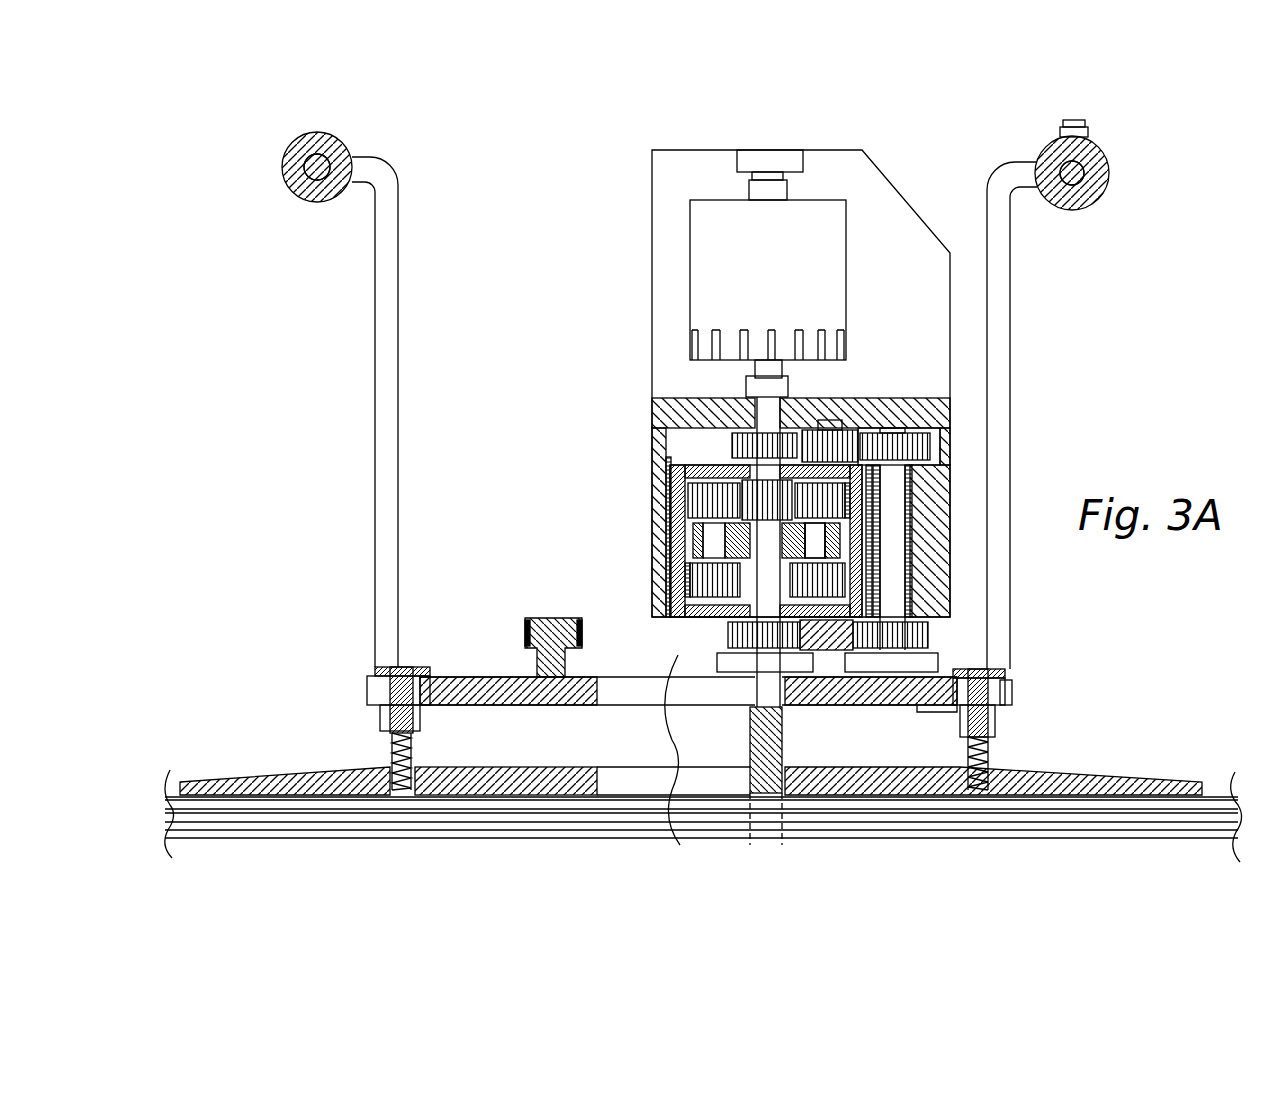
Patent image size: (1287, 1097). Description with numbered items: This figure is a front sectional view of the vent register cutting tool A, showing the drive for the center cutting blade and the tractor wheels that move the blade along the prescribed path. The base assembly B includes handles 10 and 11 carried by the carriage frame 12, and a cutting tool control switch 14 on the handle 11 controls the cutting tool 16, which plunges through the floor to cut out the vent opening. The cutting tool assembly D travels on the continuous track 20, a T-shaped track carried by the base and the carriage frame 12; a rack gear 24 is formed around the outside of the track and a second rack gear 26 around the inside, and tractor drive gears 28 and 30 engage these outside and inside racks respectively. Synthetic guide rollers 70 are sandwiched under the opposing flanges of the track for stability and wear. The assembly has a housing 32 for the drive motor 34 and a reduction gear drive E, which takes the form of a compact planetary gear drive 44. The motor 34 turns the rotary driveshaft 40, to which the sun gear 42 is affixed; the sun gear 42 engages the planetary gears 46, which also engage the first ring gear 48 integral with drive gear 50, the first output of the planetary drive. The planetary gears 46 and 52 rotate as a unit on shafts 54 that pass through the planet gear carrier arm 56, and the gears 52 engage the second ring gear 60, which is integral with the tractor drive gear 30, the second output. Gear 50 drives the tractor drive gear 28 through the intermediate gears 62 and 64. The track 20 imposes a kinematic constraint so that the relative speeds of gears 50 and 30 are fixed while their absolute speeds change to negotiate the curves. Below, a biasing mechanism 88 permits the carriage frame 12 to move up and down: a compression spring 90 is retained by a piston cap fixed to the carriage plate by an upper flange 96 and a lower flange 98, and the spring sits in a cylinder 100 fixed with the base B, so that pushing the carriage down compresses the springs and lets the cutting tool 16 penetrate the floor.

The handle 10 is at (372, 268).
The handle 11 is at (1013, 280).
The carriage frame 12 is at (553, 709).
The cutting tool control switch 14 is at (1092, 128).
The cutting tool 16 is at (790, 745).
The continuous track 20 is at (545, 618).
The rack gear 24 is at (524, 634).
The second rack gear 26 is at (583, 640).
The tractor drive gear 28 is at (945, 635).
The tractor drive gear 30 is at (727, 637).
The housing 32 is at (648, 193).
The drive motor 34 is at (848, 245).
The rotary driveshaft 40 is at (775, 413).
The sun gear 42 is at (688, 455).
The planetary gear drive 44 is at (965, 580).
The planetary gear 46 is at (722, 488).
The first ring gear 48 is at (702, 500).
The drive gear 50 is at (722, 420).
The planetary gear 52 is at (690, 558).
The shaft 54 is at (822, 550).
The planet gear carrier arm 56 is at (825, 508).
The second ring gear 60 is at (688, 592).
The intermediate gear 62 is at (835, 425).
The intermediate gear 64 is at (928, 433).
The synthetic guide roller 70 is at (722, 672).
The biasing mechanism 88 is at (366, 700).
The compression spring 90 is at (400, 793).
The upper flange 96 is at (408, 660).
The lower flange 98 is at (432, 708).
The cylinder 100 is at (390, 745).
The vent register cutting tool A is at (528, 180).
The base assembly B is at (293, 770).
The cutting tool assembly D is at (666, 515).
The reduction gear drive E is at (695, 436).